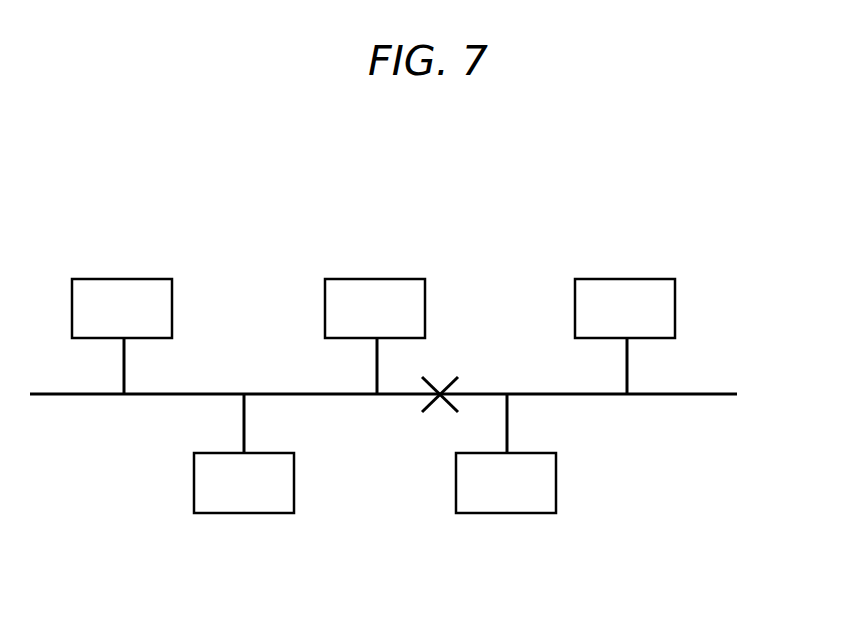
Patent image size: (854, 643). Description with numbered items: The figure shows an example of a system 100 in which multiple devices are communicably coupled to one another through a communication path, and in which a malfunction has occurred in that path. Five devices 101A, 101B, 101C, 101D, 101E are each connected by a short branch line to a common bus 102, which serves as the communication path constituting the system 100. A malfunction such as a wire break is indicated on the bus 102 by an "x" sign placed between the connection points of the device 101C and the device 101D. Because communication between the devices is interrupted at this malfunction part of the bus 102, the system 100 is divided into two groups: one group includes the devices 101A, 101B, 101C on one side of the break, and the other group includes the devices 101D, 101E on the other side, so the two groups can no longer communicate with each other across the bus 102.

The system 100 is at (271, 276).
The device 101A is at (118, 278).
The device 101B is at (248, 514).
The device 101C is at (375, 278).
The device 101D is at (508, 514).
The device 101E is at (627, 278).
The bus 102 is at (696, 393).